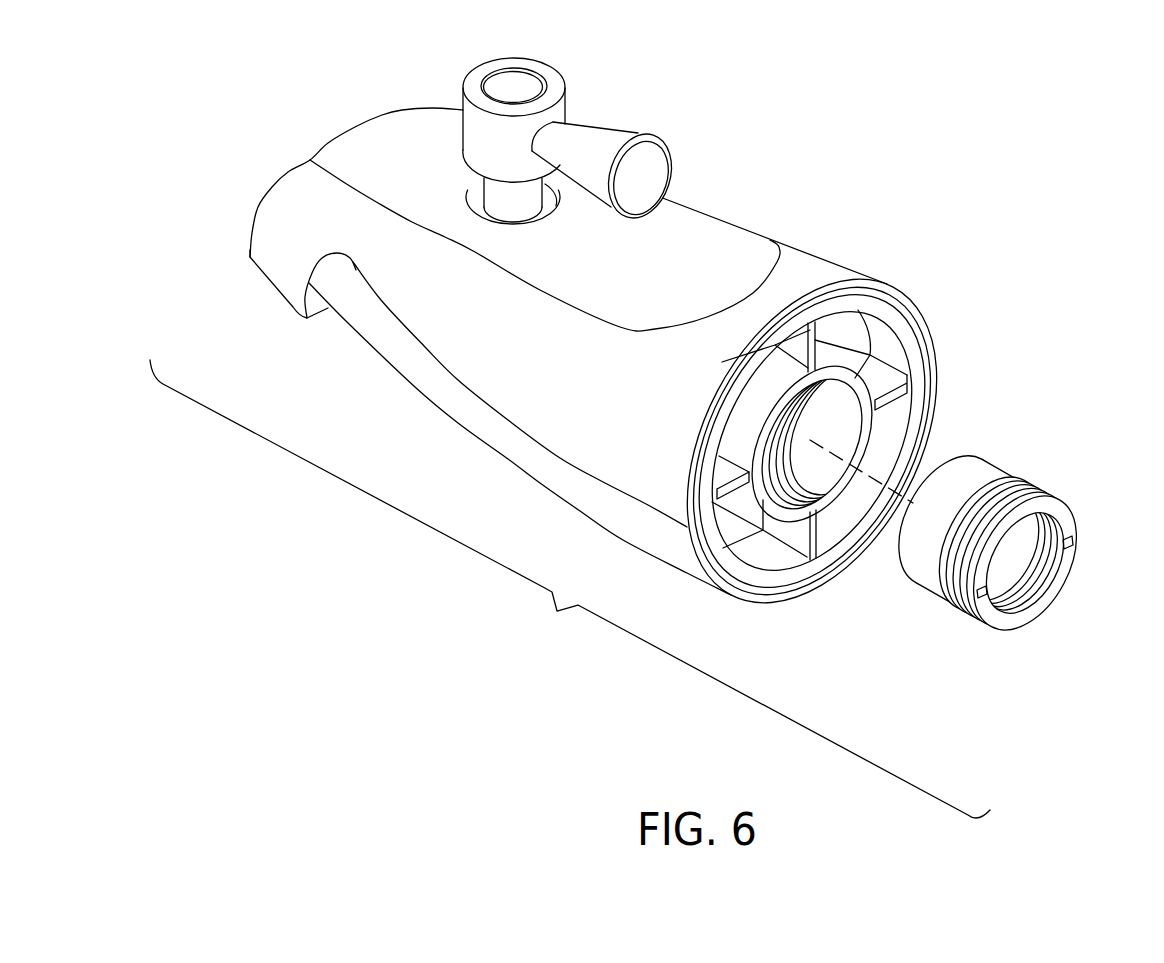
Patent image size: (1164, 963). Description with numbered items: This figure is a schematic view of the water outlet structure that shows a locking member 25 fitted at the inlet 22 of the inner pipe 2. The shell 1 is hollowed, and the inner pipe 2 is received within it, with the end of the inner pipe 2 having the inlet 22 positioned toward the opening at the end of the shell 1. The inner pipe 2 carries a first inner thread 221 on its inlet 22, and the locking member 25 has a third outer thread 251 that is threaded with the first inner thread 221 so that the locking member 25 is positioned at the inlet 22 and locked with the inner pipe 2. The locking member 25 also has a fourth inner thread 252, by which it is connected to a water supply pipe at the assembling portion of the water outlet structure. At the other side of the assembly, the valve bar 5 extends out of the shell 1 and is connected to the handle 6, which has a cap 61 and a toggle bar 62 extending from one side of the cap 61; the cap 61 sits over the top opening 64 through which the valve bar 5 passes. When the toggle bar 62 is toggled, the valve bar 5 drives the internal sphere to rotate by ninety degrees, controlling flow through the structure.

The shell 1 is at (732, 243).
The inner pipe 2 is at (860, 380).
The inlet 22 is at (850, 502).
The first inner thread 221 is at (799, 478).
The locking member 25 is at (1013, 535).
The third outer thread 251 is at (1032, 491).
The fourth inner thread 252 is at (1058, 555).
The valve bar 5 is at (497, 207).
The handle 6 is at (534, 134).
The cap 61 is at (475, 138).
The toggle bar 62 is at (628, 139).
The top opening 64 is at (522, 80).